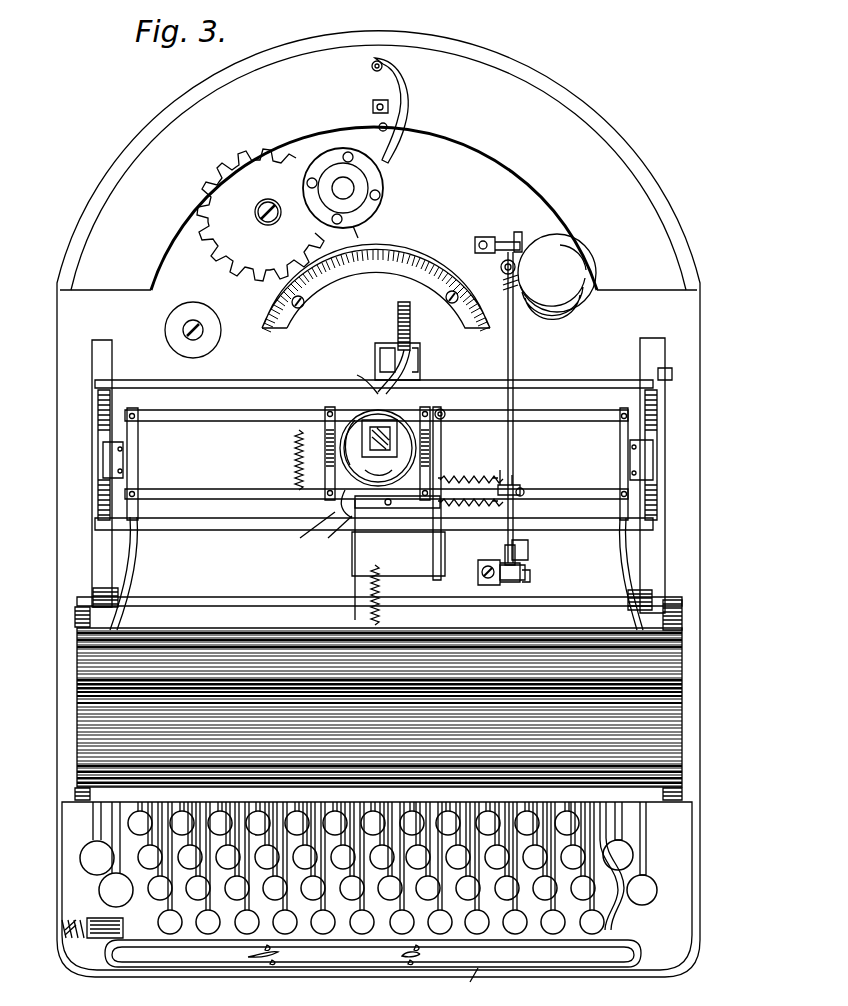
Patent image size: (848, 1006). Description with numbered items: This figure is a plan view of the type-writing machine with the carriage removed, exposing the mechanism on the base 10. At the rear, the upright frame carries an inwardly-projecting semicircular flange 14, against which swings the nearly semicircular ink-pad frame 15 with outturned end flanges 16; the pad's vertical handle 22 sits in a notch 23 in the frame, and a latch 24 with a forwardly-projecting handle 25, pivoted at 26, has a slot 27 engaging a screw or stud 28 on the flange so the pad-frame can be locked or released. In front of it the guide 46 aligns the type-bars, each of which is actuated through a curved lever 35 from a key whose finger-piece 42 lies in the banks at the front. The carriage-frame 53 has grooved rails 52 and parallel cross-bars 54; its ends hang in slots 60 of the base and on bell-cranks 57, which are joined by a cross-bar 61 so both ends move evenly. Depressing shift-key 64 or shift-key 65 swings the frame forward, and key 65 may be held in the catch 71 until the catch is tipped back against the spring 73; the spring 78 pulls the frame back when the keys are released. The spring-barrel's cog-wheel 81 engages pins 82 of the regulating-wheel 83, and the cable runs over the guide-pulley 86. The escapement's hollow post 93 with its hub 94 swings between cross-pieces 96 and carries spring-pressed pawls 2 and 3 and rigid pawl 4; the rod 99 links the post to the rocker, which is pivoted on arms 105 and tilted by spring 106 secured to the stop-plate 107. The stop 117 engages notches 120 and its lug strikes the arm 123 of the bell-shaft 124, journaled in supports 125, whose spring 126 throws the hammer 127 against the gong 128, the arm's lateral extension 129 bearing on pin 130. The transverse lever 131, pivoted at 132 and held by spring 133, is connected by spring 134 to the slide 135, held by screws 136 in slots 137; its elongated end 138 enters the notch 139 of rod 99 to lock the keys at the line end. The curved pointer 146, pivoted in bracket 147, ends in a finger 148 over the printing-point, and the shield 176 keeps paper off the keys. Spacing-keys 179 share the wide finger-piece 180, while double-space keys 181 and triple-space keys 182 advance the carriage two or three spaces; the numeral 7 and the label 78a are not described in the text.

The spring-pressed pawl 2 is at (378, 448).
The spring-pressed pawl 3 is at (386, 428).
The rigid pawl 4 is at (372, 420).
The type wheel hub 7 is at (378, 475).
The base 10 is at (700, 500).
The semicircular flange 14 is at (620, 190).
The ink-pad frame 15 is at (422, 132).
The outturned end flanges 16 is at (112, 292).
The vertical handle 22 is at (378, 99).
The notch 23 is at (388, 100).
The latch 24 is at (403, 118).
The forwardly-projecting handle 25 is at (389, 158).
The latch pivot 26 is at (388, 133).
The slot 27 is at (392, 64).
The screw or stud 28 is at (371, 68).
The curved lever 35 is at (400, 876).
The finger-piece 42 is at (283, 905).
The guide 46 is at (367, 275).
The grooved rails 52 is at (570, 379).
The carriage-frame 53 is at (660, 418).
The cross-bars 54 is at (258, 422).
The bell-cranks 57 is at (104, 574).
The slots 60 is at (92, 362).
The cross-bar 61 is at (258, 594).
The shift-key 64 is at (112, 830).
The shift-key 65 is at (95, 820).
The catch 71 is at (106, 940).
The spring 73 is at (75, 942).
The spring 78 is at (296, 458).
The end blocks 78a is at (123, 463).
The cog-wheel 81 is at (260, 215).
The pins 82 is at (378, 200).
The regulating-wheel 83 is at (365, 232).
The guide-pulley 86 is at (205, 350).
The hollow post 93 is at (356, 420).
The hub 94 is at (345, 498).
The cross-pieces 96 is at (326, 470).
The rod 99 is at (352, 564).
The arms 105 is at (136, 580).
The spring 106 is at (380, 617).
The stop-plate 107 is at (388, 556).
The stop 117 is at (422, 262).
The notches 120 is at (492, 240).
The arm 123 is at (523, 565).
The bell-shaft 124 is at (520, 362).
The supports 125 is at (530, 575).
The spring 126 is at (504, 286).
The hammer 127 is at (500, 267).
The bell or gong 128 is at (557, 276).
The lateral extension 129 is at (530, 540).
The pin 130 is at (506, 550).
The transverse lever 131 is at (448, 578).
The pivot 132 is at (445, 412).
The spring 133 is at (470, 473).
The spring 134 is at (470, 520).
The slide 135 is at (410, 500).
The screws 136 is at (515, 485).
The slots 137 is at (526, 490).
The elongated end 138 is at (333, 534).
The notch 139 is at (308, 532).
The curved pointer 146 is at (412, 328).
The bracket 147 is at (420, 358).
The finger 148 is at (359, 378).
The curved plate or shield 176 is at (682, 718).
The spacing-keys 179 is at (135, 940).
The finger-piece 180 is at (480, 983).
The double-space keys 181 is at (625, 830).
The triple-space keys 182 is at (636, 860).